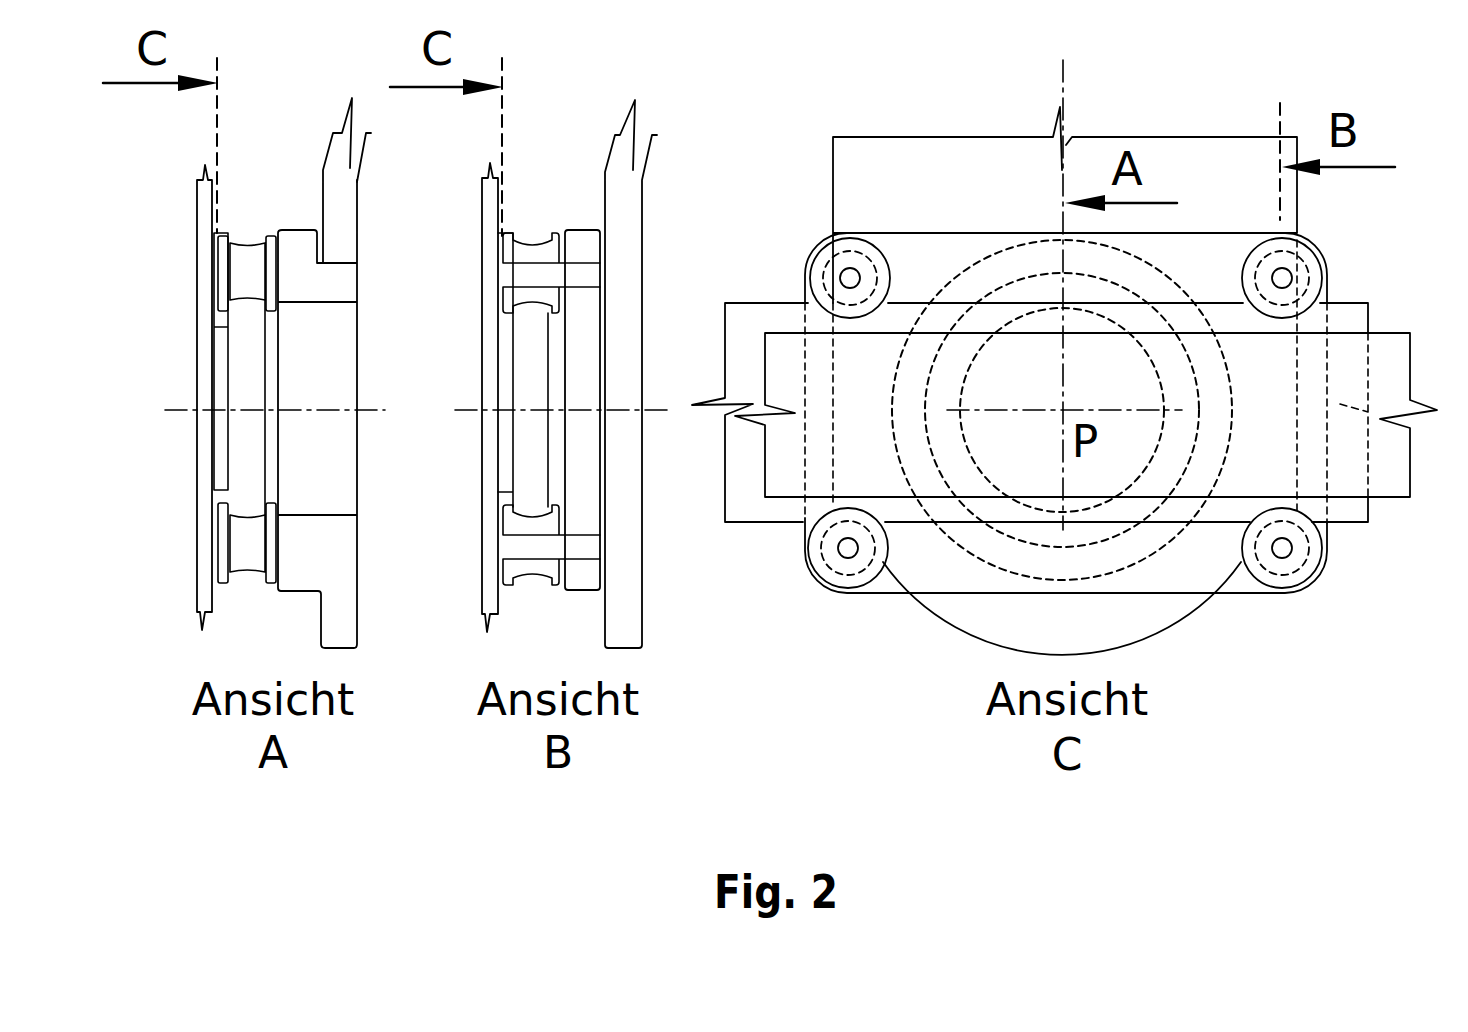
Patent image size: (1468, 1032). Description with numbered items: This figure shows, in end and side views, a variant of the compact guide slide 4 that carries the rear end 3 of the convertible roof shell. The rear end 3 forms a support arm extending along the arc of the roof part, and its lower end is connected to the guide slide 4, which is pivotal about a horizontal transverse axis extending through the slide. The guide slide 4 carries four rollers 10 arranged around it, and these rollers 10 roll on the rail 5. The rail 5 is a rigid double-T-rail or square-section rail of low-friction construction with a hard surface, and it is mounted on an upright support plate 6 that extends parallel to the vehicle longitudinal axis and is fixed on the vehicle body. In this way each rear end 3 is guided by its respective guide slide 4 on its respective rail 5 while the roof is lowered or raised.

The rear end 3 is at (342, 216).
The guide slide 4 is at (332, 283).
The rail 5 is at (242, 352).
The support plate 6 is at (202, 462).
The roller 10 is at (247, 270).